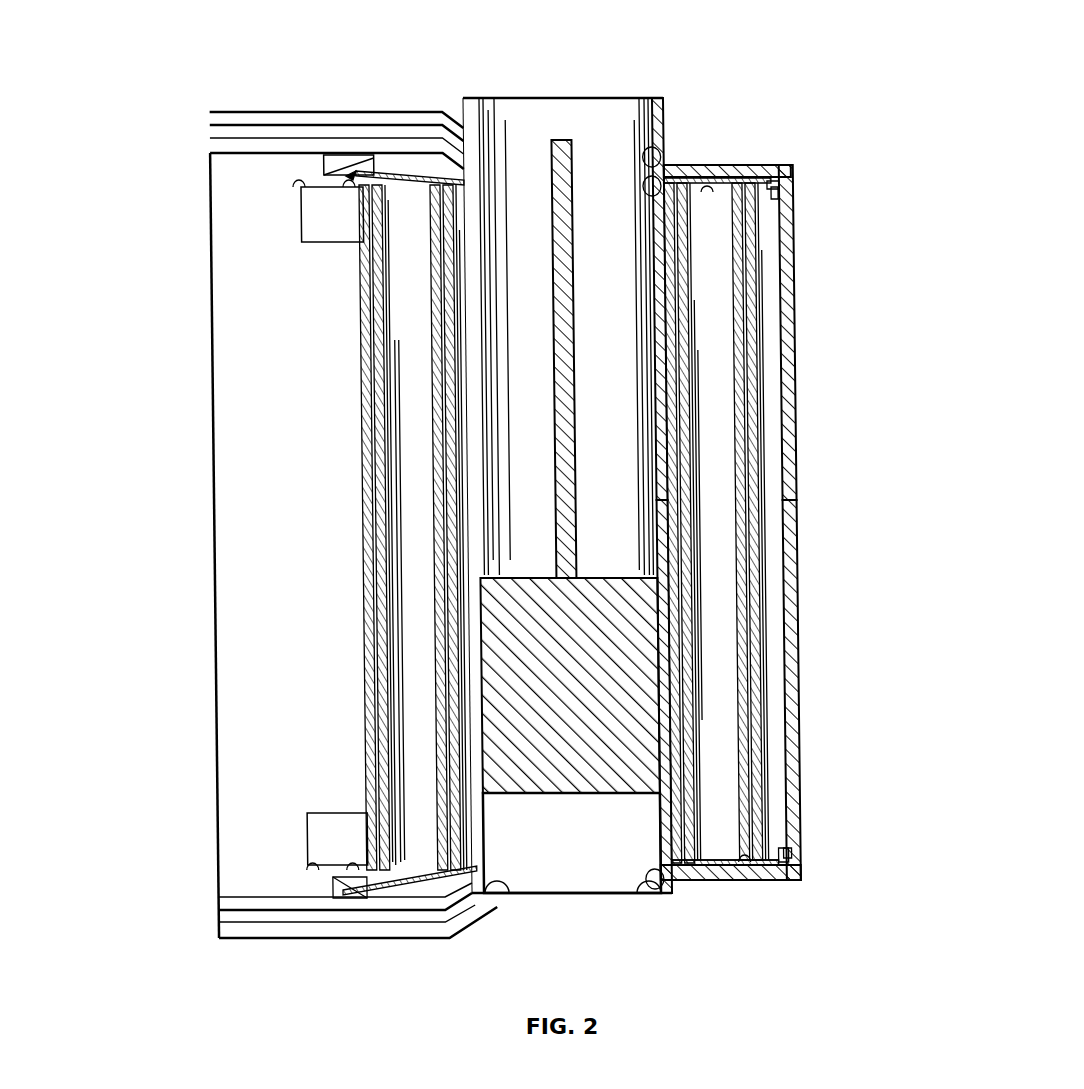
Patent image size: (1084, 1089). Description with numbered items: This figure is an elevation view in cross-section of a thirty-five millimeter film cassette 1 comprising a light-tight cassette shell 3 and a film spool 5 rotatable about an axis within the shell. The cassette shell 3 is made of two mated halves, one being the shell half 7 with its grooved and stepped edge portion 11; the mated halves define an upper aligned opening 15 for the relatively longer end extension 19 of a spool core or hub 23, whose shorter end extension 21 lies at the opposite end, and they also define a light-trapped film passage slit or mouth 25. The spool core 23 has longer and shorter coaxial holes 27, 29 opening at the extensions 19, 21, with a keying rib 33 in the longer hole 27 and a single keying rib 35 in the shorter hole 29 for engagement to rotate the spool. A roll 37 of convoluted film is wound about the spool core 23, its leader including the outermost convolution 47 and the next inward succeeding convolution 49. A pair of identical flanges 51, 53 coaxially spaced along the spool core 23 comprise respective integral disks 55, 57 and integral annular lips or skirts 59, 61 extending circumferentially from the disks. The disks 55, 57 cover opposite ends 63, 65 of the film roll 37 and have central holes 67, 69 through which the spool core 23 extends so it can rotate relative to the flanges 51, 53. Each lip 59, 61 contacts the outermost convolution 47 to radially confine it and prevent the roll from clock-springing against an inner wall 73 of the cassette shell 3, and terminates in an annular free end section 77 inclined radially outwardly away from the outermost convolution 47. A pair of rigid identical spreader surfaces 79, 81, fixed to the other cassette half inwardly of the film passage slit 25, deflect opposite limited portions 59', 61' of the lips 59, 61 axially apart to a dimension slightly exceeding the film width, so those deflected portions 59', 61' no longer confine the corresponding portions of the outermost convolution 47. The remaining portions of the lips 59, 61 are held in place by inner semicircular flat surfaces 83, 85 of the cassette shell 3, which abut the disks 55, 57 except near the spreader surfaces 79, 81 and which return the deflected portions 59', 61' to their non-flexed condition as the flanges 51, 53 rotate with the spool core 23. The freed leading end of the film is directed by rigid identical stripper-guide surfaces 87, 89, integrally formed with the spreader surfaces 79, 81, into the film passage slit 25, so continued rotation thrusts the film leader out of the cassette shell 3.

The film cassette 1 is at (288, 97).
The cassette shell 3 is at (800, 808).
The film spool 5 is at (354, 512).
The shell half 7 is at (345, 112).
The grooved and stepped edge portion 11 is at (215, 133).
The upper aligned opening 15 is at (660, 152).
The longer opposite end extension 19 is at (665, 100).
The shorter opposite end extension 21 is at (665, 893).
The spool core 23 is at (612, 578).
The film passage slit 25 is at (243, 305).
The longer coaxial hole 27 is at (525, 98).
The shorter coaxial hole 29 is at (543, 893).
The keying rib 33 is at (573, 160).
The single keying rib 35 is at (605, 795).
The film roll 37 is at (358, 345).
The outermost convolution 47 is at (358, 390).
The next inward succeeding convolution 49 is at (358, 432).
The flange 51 is at (360, 158).
The flange 53 is at (765, 880).
The disk 55 is at (400, 178).
The disk 57 is at (708, 862).
The annular lip 59 is at (772, 186).
The deflected portion of annular lip 59' is at (311, 171).
The annular lip 61 is at (825, 853).
The deflected portion of annular lip 61' is at (316, 884).
The side of film roll 63 is at (386, 200).
The side of film roll 65 is at (395, 880).
The central hole 67 is at (476, 184).
The central hole 69 is at (480, 895).
The inner wall of cassette shell 73 is at (782, 495).
The annular free end section 77 is at (346, 258).
The spreader surface 79 is at (295, 192).
The spreader surface 81 is at (302, 870).
The inner semicircular flat surface 83 is at (715, 166).
The inner semicircular flat surface 85 is at (730, 880).
The stripper-guide surface 87 is at (334, 245).
The stripper-guide surface 89 is at (348, 812).